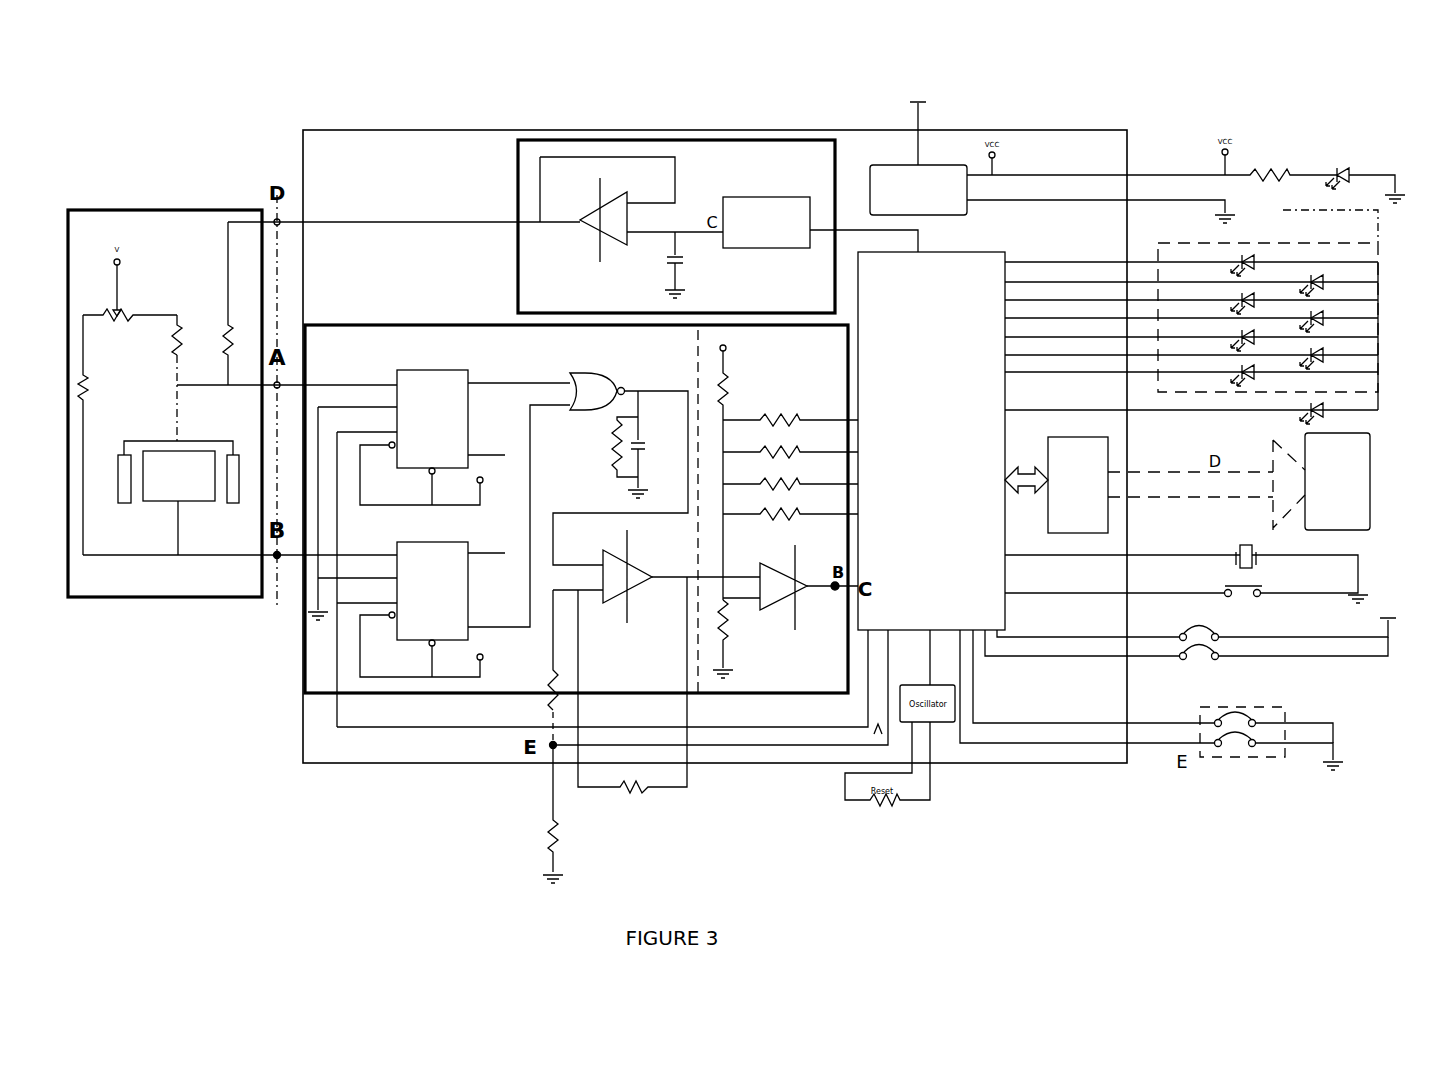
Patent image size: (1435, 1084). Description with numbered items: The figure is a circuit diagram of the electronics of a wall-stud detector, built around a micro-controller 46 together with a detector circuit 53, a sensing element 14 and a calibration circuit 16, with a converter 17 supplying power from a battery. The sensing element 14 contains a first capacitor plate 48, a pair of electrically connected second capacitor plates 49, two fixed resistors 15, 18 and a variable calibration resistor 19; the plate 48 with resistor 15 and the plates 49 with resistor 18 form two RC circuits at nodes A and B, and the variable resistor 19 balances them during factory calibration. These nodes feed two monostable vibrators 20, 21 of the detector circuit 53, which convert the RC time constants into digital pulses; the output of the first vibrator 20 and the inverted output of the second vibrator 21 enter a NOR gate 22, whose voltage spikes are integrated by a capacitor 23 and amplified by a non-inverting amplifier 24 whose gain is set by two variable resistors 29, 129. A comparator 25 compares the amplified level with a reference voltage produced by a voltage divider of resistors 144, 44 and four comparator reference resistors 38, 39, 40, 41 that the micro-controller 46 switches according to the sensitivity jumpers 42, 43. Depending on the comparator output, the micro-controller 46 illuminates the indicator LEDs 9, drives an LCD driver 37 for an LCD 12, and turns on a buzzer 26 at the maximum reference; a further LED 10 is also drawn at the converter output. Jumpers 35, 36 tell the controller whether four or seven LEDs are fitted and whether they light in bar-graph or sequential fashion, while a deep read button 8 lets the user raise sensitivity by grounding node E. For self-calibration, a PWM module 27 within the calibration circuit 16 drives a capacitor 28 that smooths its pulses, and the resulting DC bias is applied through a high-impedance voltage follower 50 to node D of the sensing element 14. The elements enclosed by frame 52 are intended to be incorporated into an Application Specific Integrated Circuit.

The deep read button 8 is at (1181, 605).
The LEDs 9 is at (1385, 255).
The LED D10 10 is at (1350, 163).
The LCDs 12 is at (1372, 478).
The sensing element 14 is at (150, 210).
The fixed resistor 15 is at (180, 356).
The calibration circuit 16 is at (705, 140).
The converter 17 is at (882, 185).
The fixed resistor 18 is at (88, 382).
The variable resistor 19 is at (137, 313).
The monostable vibrator 20 is at (411, 437).
The monostable vibrator 21 is at (444, 541).
The NOR gate 22 is at (588, 390).
The capacitor 23 is at (640, 444).
The non-inverting amplifier 24 is at (628, 578).
The comparator 25 is at (790, 585).
The buzzer 26 is at (1243, 548).
The PWM module 27 is at (800, 170).
The capacitor 28 is at (688, 262).
The variable resistor 29 is at (633, 792).
The jumper 35 is at (1190, 625).
The jumper 36 is at (1198, 663).
The LCD driver 37 is at (1056, 485).
The comparator reference resistor 38 is at (778, 420).
The comparator reference resistor 39 is at (778, 452).
The comparator reference resistor 40 is at (778, 484).
The comparator reference resistor 41 is at (778, 514).
The jumper 42 is at (1228, 712).
The jumper 43 is at (1238, 748).
The resistor 44 is at (733, 378).
The micro-controller 46 is at (931, 441).
The first capacitor plate 48 is at (160, 470).
The second capacitor plates 49 is at (118, 480).
The voltage follower 50 is at (600, 222).
The frame 52 is at (437, 767).
The detector circuit 53 is at (305, 655).
The variable resistor 129 is at (562, 838).
The resistor 144 is at (733, 643).